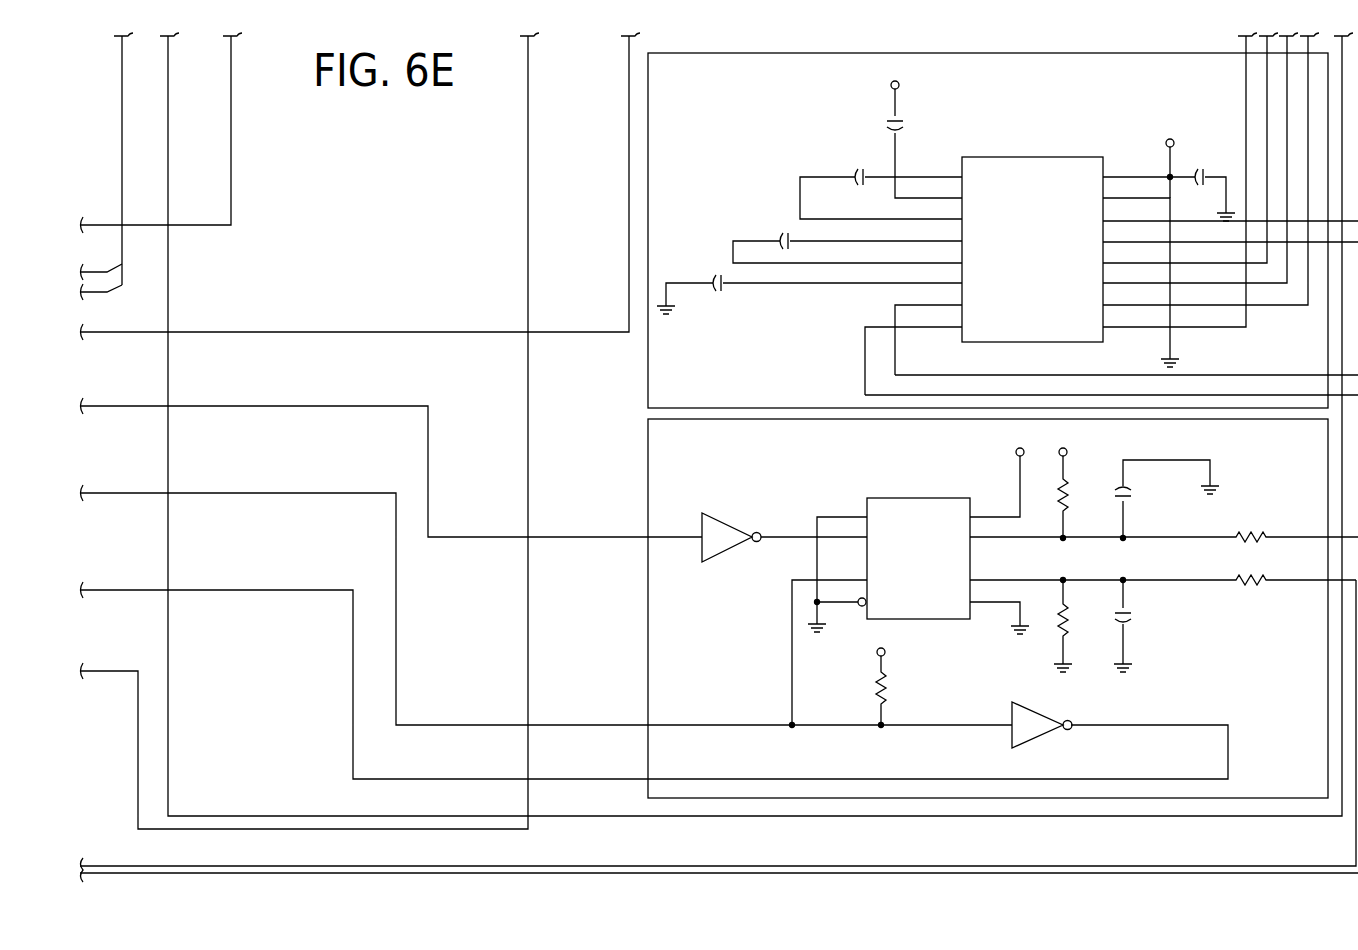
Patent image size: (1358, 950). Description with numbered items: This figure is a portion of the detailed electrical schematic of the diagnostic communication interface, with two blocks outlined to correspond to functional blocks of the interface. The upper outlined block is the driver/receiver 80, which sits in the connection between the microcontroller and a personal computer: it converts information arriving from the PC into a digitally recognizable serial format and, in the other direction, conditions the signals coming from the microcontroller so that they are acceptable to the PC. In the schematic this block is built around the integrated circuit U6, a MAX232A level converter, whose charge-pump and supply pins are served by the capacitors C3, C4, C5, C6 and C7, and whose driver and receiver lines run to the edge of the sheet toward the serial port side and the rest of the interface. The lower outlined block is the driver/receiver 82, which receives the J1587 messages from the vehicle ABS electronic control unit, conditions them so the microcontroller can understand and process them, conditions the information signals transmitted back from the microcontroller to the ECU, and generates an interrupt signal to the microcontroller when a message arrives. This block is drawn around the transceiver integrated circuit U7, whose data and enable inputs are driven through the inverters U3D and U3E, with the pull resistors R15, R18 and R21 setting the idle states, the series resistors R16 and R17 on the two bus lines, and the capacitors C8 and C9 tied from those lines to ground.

The driver/receiver 80 is at (648, 396).
The driver/receiver 82 is at (648, 471).
The MAX232A RS-232 driver/receiver U6 is at (1036, 254).
The 65176 RS-485 transceiver U7 is at (1012, 578).
The 74HC04 inverter U3D is at (773, 537).
The 74HC04 inverter U3E is at (1037, 730).
The 0.1uF capacitor C3 is at (920, 131).
The 0.1uF capacitor C4 is at (881, 172).
The 0.1uF capacitor C5 is at (1170, 169).
The 0.1uF capacitor C6 is at (847, 224).
The 0.1uF capacitor C7 is at (809, 271).
The 0.001uF capacitor C8 is at (1167, 500).
The 0.001uF capacitor C9 is at (1159, 625).
The 4.7K resistor R15 is at (1075, 484).
The 47 ohm 1W resistor R16 is at (1295, 517).
The 47 ohm 1W resistor R17 is at (1294, 604).
The 4.7K resistor R18 is at (1080, 625).
The 4.7K resistor R21 is at (894, 676).